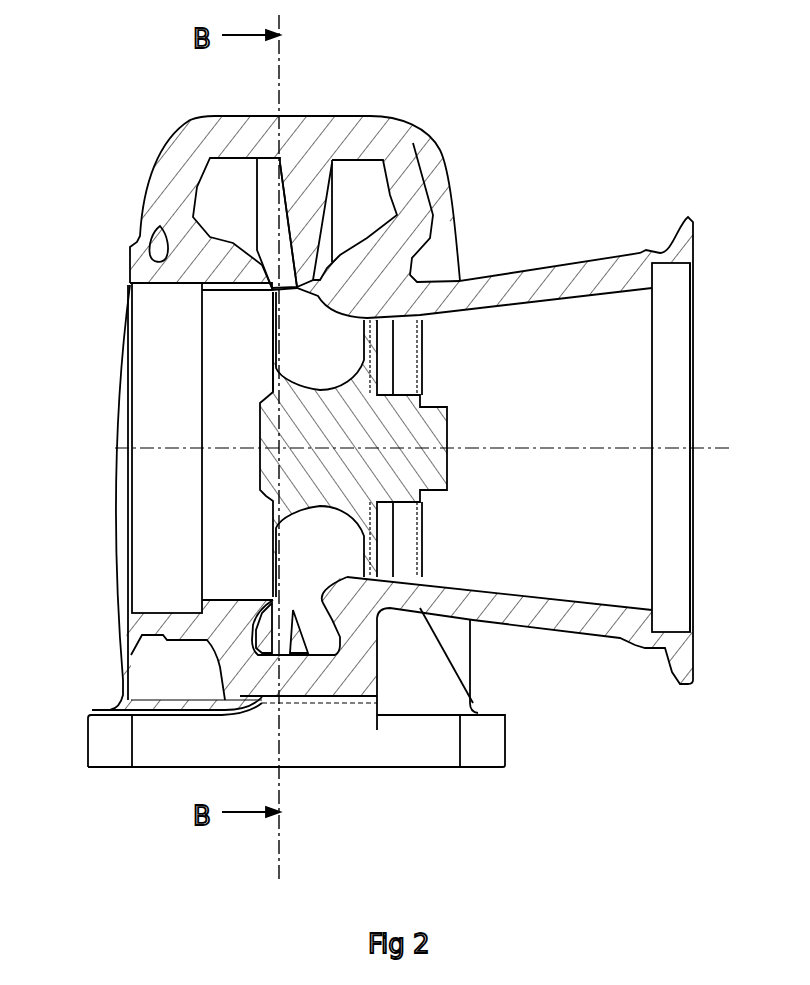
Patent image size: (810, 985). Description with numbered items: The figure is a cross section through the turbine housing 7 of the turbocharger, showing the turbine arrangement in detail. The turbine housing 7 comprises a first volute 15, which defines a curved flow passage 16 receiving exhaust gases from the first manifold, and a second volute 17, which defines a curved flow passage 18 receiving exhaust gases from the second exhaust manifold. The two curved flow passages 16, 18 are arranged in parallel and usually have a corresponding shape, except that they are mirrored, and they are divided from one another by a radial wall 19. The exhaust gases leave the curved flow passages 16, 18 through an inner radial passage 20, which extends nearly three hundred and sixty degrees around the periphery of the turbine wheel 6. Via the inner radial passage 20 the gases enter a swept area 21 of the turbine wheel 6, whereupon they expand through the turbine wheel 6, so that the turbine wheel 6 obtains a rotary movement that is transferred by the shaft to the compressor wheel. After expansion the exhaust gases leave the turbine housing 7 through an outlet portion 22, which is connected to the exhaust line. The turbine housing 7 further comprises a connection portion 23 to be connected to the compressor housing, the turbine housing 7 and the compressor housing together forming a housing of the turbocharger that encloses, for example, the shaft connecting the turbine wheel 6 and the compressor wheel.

The turbine wheel 6 is at (410, 450).
The turbine housing 7 is at (380, 752).
The first volute 15 is at (173, 203).
The curved flow passage 16 is at (245, 200).
The second volute 17 is at (420, 201).
The curved flow passage 18 is at (366, 200).
The radial wall 19 is at (300, 212).
The inner radial passage 20 is at (298, 292).
The swept area 21 is at (343, 357).
The outlet portion 22 is at (565, 612).
The connection portion 23 is at (140, 260).